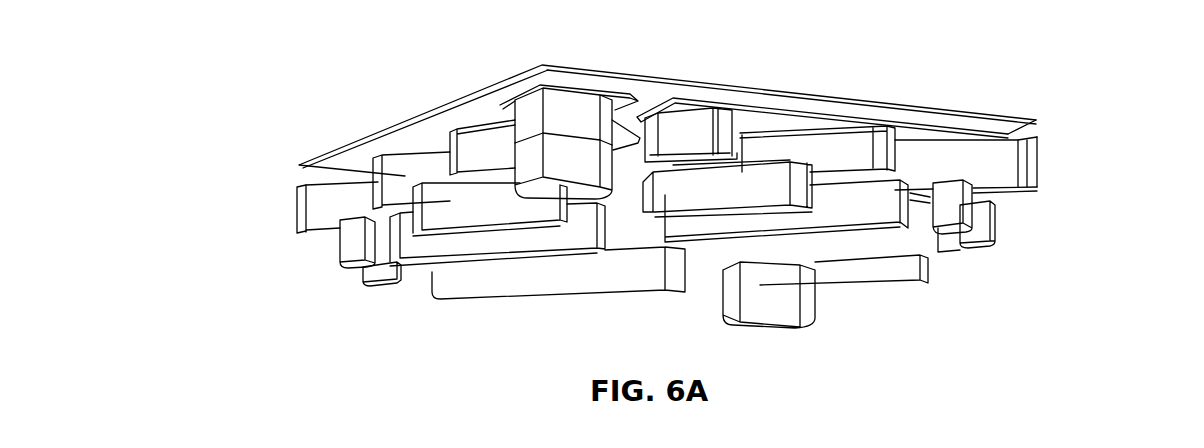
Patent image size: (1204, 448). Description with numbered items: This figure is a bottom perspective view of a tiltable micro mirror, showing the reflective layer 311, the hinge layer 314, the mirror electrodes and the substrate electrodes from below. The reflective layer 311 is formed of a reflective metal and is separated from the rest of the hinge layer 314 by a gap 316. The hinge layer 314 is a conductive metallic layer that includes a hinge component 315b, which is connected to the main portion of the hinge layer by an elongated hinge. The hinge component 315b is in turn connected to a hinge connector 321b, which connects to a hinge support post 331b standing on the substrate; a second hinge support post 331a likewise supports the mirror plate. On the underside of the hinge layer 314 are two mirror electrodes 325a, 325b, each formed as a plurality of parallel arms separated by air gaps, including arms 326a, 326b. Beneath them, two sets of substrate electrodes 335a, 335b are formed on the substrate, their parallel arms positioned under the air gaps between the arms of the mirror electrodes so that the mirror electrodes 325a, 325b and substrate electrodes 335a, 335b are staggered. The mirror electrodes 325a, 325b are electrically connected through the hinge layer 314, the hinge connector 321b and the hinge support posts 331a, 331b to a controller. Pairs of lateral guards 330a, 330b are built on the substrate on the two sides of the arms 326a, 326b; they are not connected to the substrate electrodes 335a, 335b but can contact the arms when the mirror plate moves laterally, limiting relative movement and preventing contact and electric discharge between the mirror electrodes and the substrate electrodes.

The reflective layer 311 is at (945, 104).
The hinge layer 314 is at (1040, 140).
The gap 316 is at (1018, 129).
The hinge component 315b is at (580, 90).
The hinge connector 321b is at (528, 122).
The hinge support post 331b is at (523, 157).
The mirror electrode 325a is at (957, 160).
The mirror electrode 325b is at (473, 152).
The arm 326a is at (1037, 165).
The arm 326b is at (296, 207).
The lateral guard 330a is at (987, 233).
The lateral guard 330b is at (375, 273).
The hinge support post 331a is at (768, 318).
The substrate electrode 335a is at (900, 270).
The substrate electrode 335b is at (502, 273).